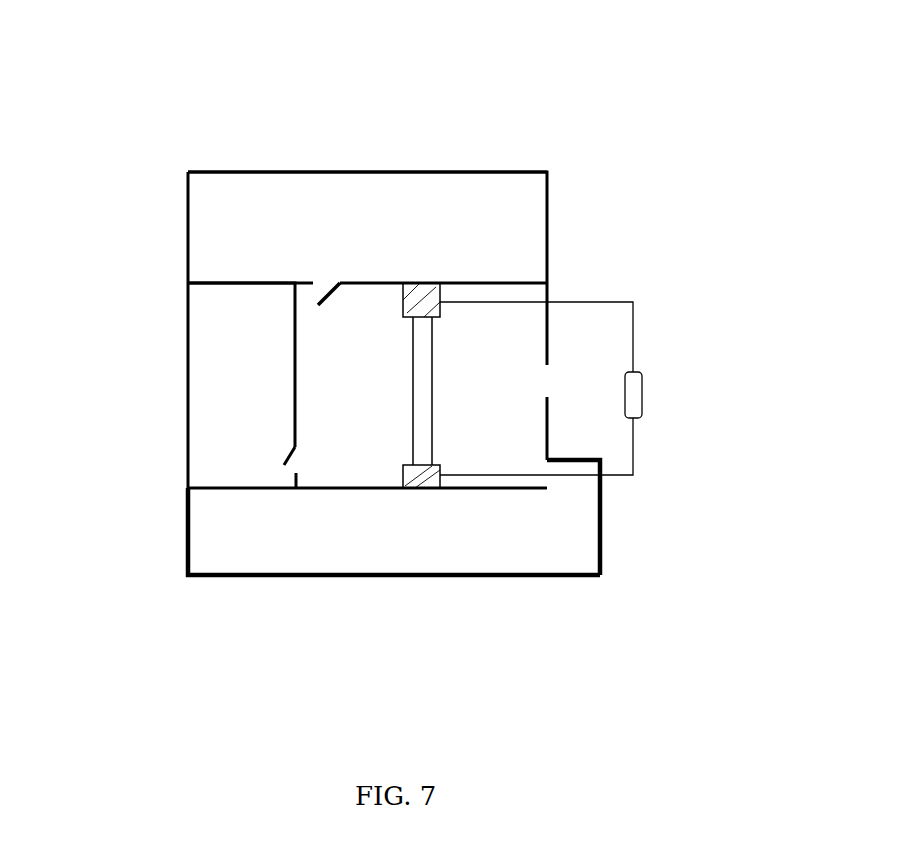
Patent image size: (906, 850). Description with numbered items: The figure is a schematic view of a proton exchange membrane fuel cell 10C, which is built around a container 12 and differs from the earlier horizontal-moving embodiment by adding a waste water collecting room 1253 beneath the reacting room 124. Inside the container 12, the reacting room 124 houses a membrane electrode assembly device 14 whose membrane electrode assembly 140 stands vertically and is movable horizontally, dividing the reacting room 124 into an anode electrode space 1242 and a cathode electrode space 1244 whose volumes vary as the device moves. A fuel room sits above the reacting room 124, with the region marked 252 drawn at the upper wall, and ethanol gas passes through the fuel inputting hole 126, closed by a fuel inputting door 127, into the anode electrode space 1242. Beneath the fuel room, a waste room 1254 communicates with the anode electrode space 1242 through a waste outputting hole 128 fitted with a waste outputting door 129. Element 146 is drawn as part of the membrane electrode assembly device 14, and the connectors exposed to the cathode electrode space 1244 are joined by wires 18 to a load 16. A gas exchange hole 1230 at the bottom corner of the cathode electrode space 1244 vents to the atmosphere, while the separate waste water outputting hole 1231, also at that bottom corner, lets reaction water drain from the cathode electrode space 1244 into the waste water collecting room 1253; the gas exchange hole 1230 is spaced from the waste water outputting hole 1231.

The proton exchange membrane fuel cell 10C is at (358, 60).
The container 12 is at (178, 235).
The top wall 252 is at (222, 250).
The waste room 1254 is at (228, 358).
The waste outputting door 129 is at (290, 460).
The waste outputting hole 128 is at (297, 466).
The fuel inputting door 127 is at (331, 284).
The fuel inputting hole 126 is at (322, 288).
The magnet 146 is at (410, 313).
The membrane electrode assembly 140 is at (425, 363).
The membrane electrode assembly device 14 is at (630, 190).
The wires 18 is at (593, 302).
The load 16 is at (635, 386).
The gas exchange hole 1230 is at (548, 380).
The waste water outputting hole 1231 is at (548, 482).
The waste water collecting room 1253 is at (532, 540).
The reacting room 124 is at (470, 635).
The anode electrode space 1242 is at (352, 415).
The cathode electrode space 1244 is at (503, 405).